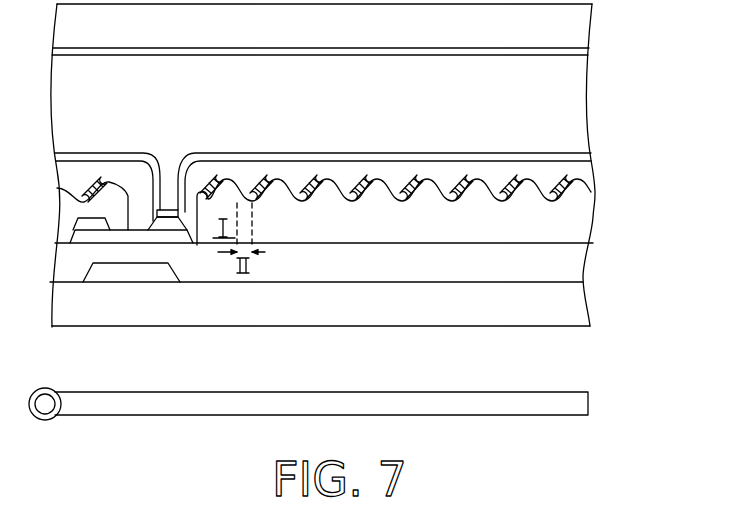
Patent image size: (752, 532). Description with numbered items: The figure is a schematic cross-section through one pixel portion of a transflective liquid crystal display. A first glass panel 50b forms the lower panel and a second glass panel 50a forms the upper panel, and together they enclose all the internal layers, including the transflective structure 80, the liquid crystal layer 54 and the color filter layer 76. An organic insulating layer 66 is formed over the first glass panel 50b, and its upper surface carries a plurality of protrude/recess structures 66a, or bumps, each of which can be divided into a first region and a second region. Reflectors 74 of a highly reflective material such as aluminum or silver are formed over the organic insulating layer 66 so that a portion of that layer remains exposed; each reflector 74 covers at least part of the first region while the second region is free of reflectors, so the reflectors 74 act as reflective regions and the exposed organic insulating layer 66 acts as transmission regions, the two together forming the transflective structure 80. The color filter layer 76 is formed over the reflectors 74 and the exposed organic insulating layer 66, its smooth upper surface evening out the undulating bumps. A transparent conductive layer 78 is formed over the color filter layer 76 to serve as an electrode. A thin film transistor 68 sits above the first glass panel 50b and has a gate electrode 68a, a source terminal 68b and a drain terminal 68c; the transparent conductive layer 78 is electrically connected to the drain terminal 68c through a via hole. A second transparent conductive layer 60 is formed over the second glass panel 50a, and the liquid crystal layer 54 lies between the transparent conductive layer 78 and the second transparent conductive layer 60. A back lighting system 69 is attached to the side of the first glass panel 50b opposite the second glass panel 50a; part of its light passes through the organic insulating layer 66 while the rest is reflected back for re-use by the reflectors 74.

The second glass panel 50a is at (373, 42).
The first glass panel 50b is at (370, 316).
The liquid crystal layer 54 is at (557, 107).
The second transparent conductive layer 60 is at (590, 50).
The organic insulating layer 66 is at (567, 227).
The protrude/recess structures 66a is at (230, 205).
The thin film transistor 68 is at (235, 330).
The gate electrode 68a is at (143, 270).
The source terminal 68b is at (88, 225).
The drain terminal 68c is at (165, 225).
The back lighting system 69 is at (567, 402).
The reflectors 74 is at (530, 177).
The color filter layer 76 is at (450, 173).
The transparent conductive layer 78 is at (560, 153).
The transflective structure 80 is at (668, 163).